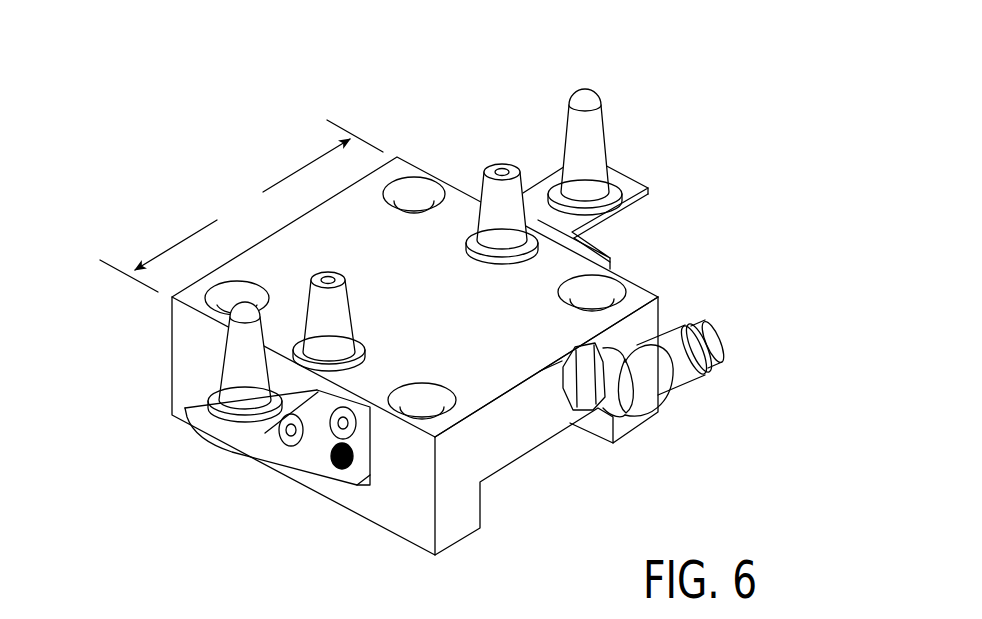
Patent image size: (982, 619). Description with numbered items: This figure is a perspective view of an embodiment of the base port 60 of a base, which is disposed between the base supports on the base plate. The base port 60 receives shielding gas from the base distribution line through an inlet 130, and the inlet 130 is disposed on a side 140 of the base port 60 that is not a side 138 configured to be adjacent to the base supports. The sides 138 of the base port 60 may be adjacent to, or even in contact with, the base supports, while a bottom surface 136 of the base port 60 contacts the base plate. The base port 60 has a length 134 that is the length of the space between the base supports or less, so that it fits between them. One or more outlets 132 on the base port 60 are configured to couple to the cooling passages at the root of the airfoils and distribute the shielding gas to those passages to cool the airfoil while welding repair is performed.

The base port 60 is at (477, 308).
The inlet 130 is at (731, 326).
The outlets 132 is at (488, 198).
The length 134 is at (241, 206).
The bottom surface 136 is at (468, 559).
The side 138 is at (656, 276).
The side 140 is at (507, 431).